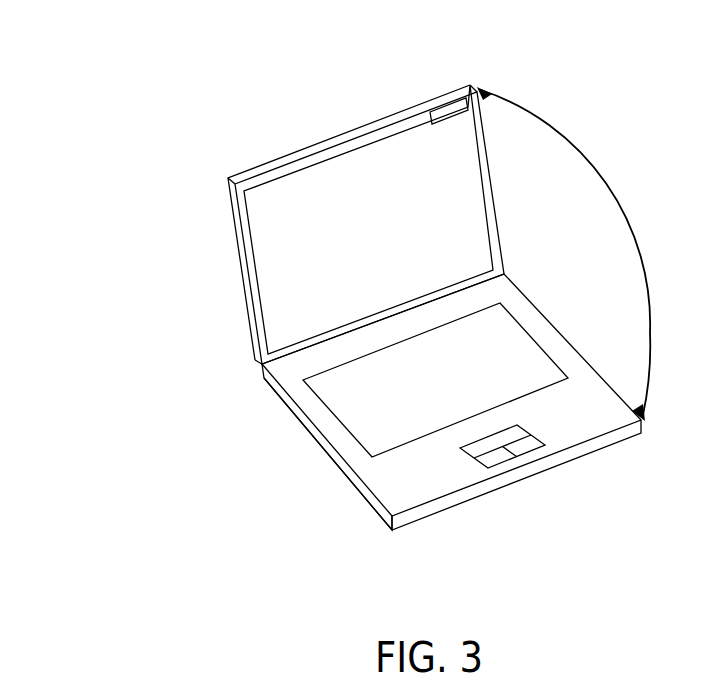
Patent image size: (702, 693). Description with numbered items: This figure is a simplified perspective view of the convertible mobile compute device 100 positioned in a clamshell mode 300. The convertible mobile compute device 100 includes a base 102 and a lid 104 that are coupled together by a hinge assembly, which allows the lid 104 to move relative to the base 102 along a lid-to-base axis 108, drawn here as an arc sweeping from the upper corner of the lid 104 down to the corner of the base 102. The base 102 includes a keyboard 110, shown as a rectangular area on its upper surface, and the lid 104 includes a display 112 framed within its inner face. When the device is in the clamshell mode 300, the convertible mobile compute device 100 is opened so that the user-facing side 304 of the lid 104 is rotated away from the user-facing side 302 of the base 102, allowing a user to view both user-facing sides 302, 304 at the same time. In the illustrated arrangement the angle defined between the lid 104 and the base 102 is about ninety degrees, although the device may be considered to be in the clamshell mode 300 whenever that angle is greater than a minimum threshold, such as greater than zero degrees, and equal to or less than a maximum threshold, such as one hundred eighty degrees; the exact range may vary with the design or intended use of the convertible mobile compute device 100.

The clamshell mode 300 is at (92, 103).
The convertible mobile compute device 100 is at (599, 81).
The base 102 is at (533, 470).
The lid 104 is at (230, 193).
The lid-to-base axis 108 is at (607, 185).
The keyboard 110 is at (515, 352).
The display 112 is at (243, 273).
The user-facing side of the base 302 is at (377, 483).
The user-facing side of the lid 304 is at (323, 152).